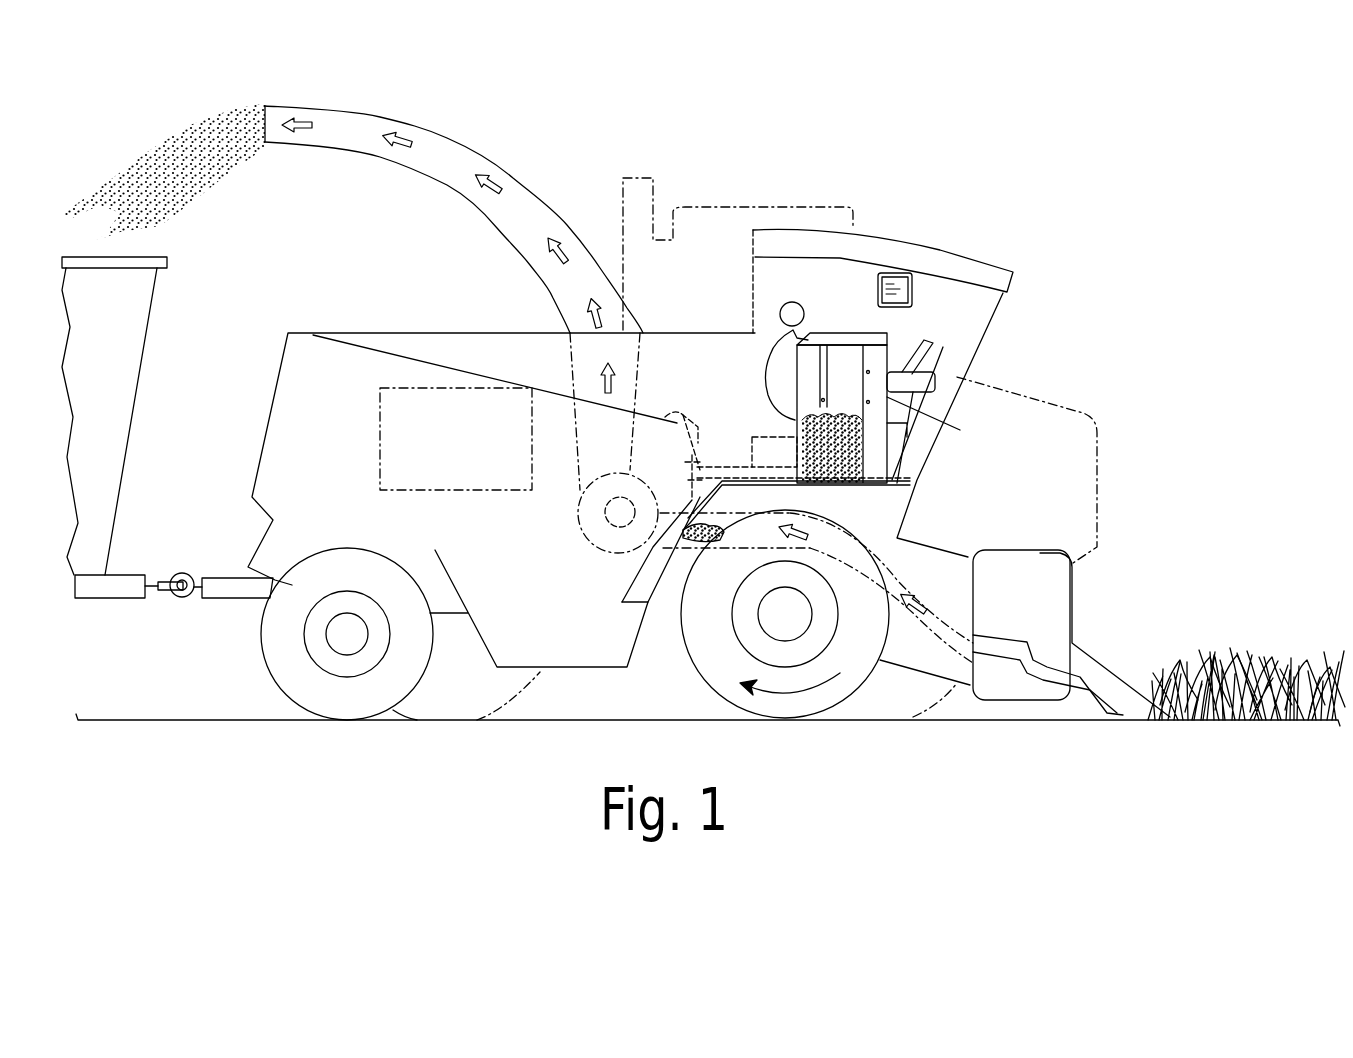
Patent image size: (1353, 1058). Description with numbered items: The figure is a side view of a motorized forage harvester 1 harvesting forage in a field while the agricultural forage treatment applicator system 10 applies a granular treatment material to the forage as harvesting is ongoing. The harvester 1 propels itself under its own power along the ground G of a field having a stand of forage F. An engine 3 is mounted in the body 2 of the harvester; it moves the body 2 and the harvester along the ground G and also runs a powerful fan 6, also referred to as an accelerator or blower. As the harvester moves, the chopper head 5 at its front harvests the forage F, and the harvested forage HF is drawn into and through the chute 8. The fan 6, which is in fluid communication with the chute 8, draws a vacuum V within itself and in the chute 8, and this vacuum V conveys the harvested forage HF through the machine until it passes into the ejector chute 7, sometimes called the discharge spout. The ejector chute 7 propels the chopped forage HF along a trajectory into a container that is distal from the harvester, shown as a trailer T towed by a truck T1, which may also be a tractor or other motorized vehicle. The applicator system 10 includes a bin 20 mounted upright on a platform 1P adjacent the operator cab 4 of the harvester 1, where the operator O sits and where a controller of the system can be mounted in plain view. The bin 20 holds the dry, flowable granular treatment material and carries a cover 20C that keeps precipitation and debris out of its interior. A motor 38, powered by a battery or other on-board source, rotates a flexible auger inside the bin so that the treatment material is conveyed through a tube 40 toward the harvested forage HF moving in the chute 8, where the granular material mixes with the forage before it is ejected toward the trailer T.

The forage harvester 1 is at (1072, 258).
The body 2 is at (262, 547).
The engine 3 is at (378, 467).
The operator cab 4 is at (958, 358).
The chopper head 5 is at (1060, 614).
The fan 6 is at (599, 459).
The ejector chute 7 is at (550, 285).
The chute 8 is at (653, 547).
The applicator system 10 is at (840, 302).
The bin 20 is at (872, 328).
The cover 20C is at (820, 333).
The motor 38 is at (897, 437).
The tube 40 is at (733, 467).
The platform 1P is at (857, 492).
The harvested forage HF is at (160, 185).
The trailer T is at (140, 355).
The truck T1 is at (725, 207).
The operator O is at (792, 302).
The vacuum V is at (606, 524).
The forage F is at (1238, 640).
The ground G is at (985, 726).